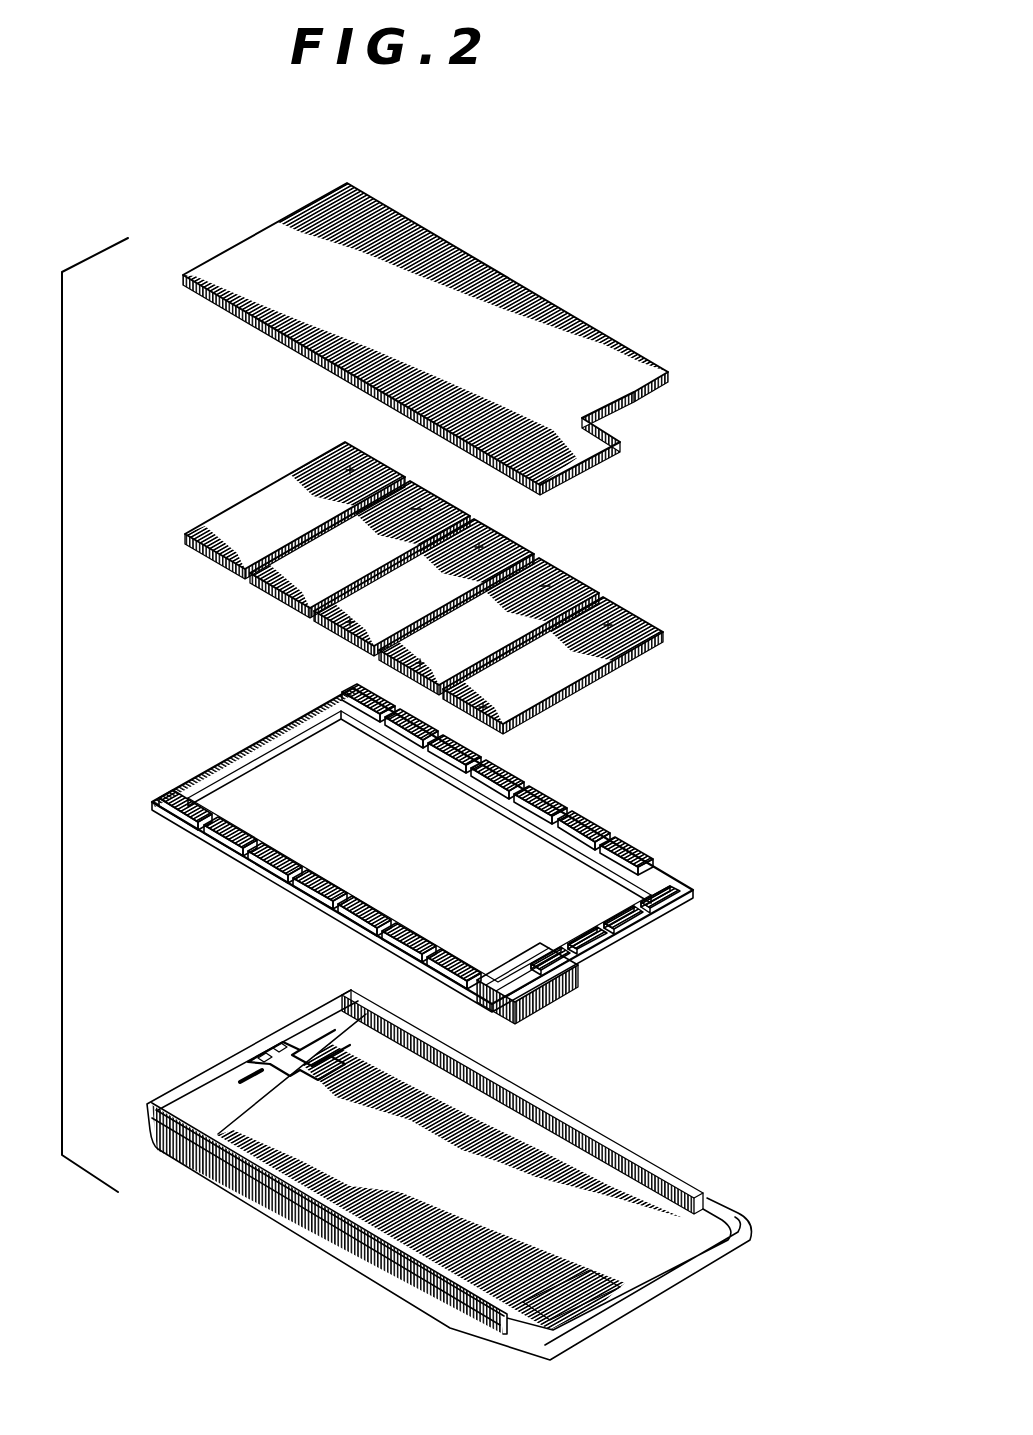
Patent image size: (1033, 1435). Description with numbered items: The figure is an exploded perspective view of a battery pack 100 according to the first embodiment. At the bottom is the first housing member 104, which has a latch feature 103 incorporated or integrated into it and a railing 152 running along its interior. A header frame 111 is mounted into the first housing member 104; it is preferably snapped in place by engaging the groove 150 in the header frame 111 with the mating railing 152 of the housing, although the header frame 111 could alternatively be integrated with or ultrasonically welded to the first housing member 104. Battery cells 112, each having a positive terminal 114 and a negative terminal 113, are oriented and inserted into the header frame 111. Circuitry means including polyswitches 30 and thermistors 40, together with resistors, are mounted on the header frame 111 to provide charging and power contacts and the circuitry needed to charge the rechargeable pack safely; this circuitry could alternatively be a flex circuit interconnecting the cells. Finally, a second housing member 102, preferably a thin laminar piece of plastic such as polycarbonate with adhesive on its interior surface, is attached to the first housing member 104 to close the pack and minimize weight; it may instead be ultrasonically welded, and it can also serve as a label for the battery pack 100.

The battery pack 100 is at (601, 160).
The second housing member 102 is at (434, 276).
The latch feature 103 is at (270, 1050).
The first housing member 104 is at (456, 1172).
The header frame 111 is at (537, 797).
The battery cells 112 is at (627, 646).
The negative terminal 113 is at (205, 556).
The positive terminal 114 is at (272, 600).
The groove 150 is at (693, 900).
The railing 152 is at (667, 1177).
The thermistors 40 is at (680, 883).
The polyswitches 30 is at (637, 928).